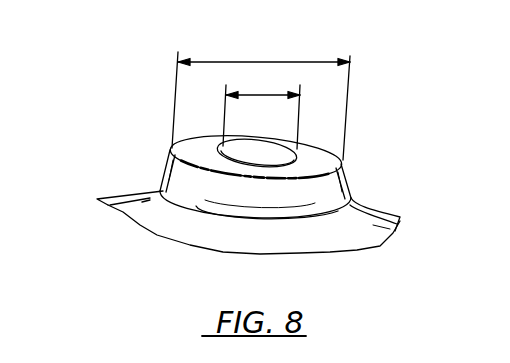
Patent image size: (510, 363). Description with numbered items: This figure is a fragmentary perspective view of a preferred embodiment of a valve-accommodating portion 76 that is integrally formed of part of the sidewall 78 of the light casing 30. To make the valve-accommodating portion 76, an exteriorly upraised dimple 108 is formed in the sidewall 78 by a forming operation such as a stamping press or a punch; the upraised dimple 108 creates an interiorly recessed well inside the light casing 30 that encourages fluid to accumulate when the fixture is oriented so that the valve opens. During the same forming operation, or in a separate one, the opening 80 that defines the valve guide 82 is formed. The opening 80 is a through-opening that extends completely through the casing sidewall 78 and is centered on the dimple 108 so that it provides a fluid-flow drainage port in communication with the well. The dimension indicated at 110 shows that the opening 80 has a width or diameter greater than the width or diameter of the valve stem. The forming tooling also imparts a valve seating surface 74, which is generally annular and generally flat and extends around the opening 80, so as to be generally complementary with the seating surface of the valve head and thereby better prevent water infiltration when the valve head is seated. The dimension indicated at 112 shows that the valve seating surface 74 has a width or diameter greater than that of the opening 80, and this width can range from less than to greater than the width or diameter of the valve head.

The light casing 30 is at (138, 192).
The valve seating surface 74 is at (186, 140).
The valve-accommodating portion 76 is at (447, 68).
The sidewall 78 is at (372, 216).
The opening 80 is at (250, 141).
The valve guide 82 is at (212, 138).
The exteriorly upraised dimple 108 is at (349, 168).
The width or diameter of the opening 110 is at (263, 88).
The width or diameter of the valve seating surface 112 is at (296, 24).